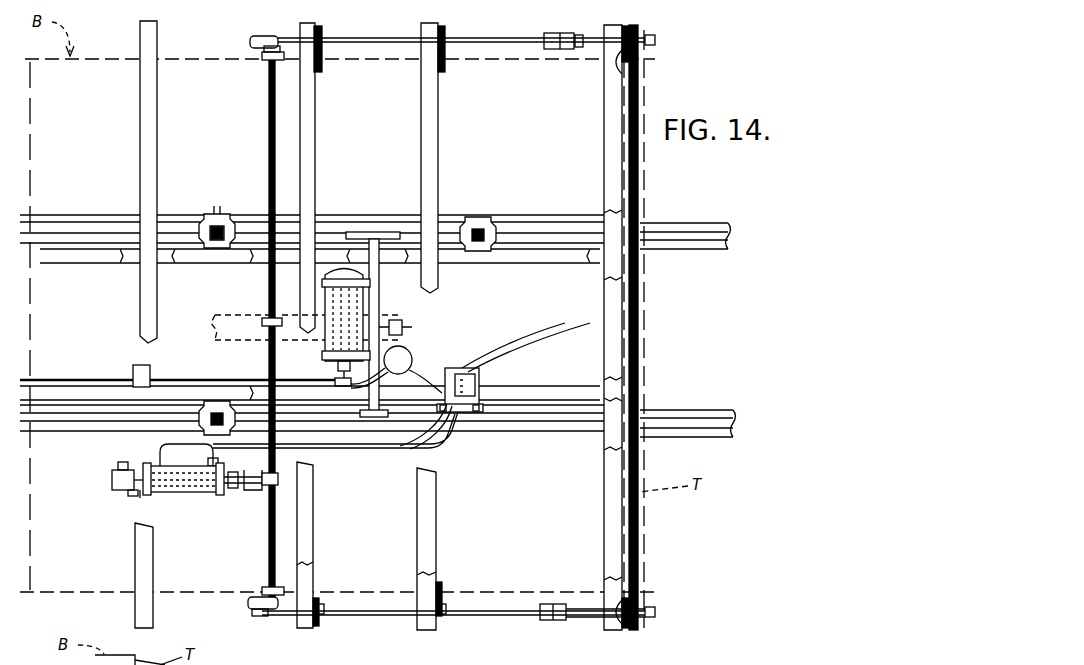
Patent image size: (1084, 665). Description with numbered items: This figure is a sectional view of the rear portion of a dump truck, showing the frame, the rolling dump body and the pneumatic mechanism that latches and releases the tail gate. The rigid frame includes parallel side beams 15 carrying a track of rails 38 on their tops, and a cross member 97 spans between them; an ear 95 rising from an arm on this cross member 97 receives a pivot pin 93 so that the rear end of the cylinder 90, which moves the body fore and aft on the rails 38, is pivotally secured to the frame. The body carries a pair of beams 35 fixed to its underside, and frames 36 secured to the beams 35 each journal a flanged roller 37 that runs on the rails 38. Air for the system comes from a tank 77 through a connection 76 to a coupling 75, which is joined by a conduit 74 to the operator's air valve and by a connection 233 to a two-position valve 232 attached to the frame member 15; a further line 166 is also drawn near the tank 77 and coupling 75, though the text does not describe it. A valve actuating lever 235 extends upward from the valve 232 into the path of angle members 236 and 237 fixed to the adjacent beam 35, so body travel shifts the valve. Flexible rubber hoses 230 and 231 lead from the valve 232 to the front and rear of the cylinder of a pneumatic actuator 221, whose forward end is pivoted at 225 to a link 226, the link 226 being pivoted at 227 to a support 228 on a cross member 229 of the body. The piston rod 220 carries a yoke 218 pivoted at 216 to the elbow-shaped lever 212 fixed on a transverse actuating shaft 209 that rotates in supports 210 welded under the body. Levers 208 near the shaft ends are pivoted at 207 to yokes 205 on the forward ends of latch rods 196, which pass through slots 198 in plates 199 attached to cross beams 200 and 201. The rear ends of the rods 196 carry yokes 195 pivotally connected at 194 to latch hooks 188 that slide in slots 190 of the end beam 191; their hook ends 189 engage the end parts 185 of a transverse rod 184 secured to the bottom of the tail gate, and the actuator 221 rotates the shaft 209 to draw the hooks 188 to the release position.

The side beams 15 is at (690, 225).
The beams 35 is at (80, 250).
The frames 36 is at (226, 218).
The flanged roller 37 is at (207, 216).
The rails 38 is at (548, 230).
The conduit 74 is at (88, 380).
The coupling 75 is at (336, 382).
The connection 76 is at (325, 355).
The tank 77 is at (366, 301).
The cylinder 90 is at (247, 312).
The pivot pin 93 is at (396, 316).
The ear 95 is at (412, 328).
The cross member 97 is at (365, 232).
The hose 166 is at (410, 356).
The transverse rod 184 is at (651, 311).
The end parts 185 is at (640, 36).
The latch hook 188 is at (576, 50).
The hook end 189 is at (656, 42).
The slots 190 is at (625, 68).
The end beam 191 is at (604, 528).
The pivotal connection 194 is at (575, 608).
The yokes 195 is at (552, 620).
The latch rods 196 is at (522, 46).
The slots 198 is at (320, 602).
The plates 199 is at (322, 50).
The cross beam 200 is at (438, 124).
The cross beam 201 is at (315, 124).
The yokes 205 is at (268, 42).
The pivot 207 is at (250, 42).
The levers 208 is at (262, 57).
The transverse actuating shaft 209 is at (268, 118).
The supports 210 is at (266, 62).
The elbow-shaped lever 212 is at (266, 478).
The pivot 216 is at (266, 488).
The yoke 218 is at (244, 486).
The piston rod 220 is at (232, 490).
The pneumatic actuator 221 is at (182, 493).
The pivot 225 is at (140, 495).
The link 226 is at (130, 494).
The pivot 227 is at (117, 464).
The support 228 is at (112, 481).
The cross member 229 is at (140, 116).
The rubber hose 230 is at (165, 446).
The rubber hose 231 is at (218, 458).
The valve 232 is at (480, 375).
The connection 233 is at (474, 368).
The valve actuating lever 235 is at (548, 326).
The angle member 236 is at (135, 366).
The angle member 237 is at (480, 386).